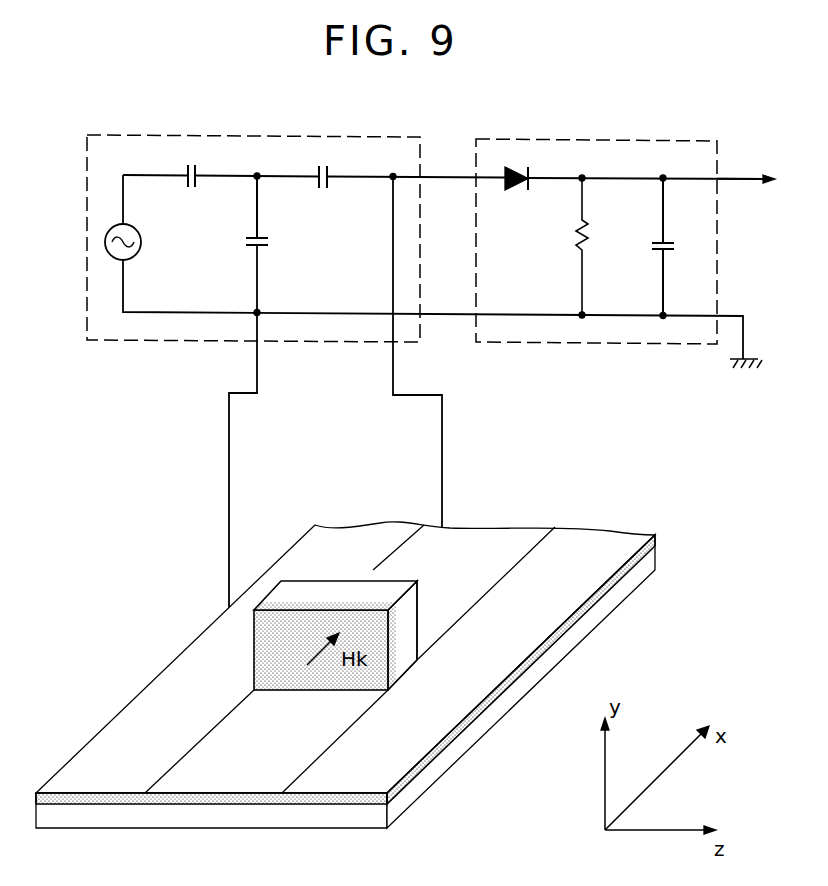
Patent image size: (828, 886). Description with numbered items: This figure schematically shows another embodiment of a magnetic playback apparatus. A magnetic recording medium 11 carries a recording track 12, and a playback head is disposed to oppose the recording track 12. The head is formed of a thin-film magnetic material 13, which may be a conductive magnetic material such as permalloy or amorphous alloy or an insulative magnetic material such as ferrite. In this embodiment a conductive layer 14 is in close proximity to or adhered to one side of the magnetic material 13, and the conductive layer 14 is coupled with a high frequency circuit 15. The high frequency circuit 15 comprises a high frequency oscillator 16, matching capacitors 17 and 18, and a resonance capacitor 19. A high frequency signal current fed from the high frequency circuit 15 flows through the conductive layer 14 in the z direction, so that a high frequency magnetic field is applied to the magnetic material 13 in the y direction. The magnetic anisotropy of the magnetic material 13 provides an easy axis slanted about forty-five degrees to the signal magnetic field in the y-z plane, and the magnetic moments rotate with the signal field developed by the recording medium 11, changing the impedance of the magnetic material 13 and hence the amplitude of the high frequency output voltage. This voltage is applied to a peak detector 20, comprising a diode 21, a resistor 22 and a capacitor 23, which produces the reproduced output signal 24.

The magnetic recording medium 11 is at (659, 543).
The recording track 12 is at (503, 540).
The thin-film magnetic material 13 is at (281, 682).
The conductive layer 14 is at (318, 590).
The high frequency circuit 15 is at (147, 135).
The high frequency oscillator 16 is at (141, 239).
The matching capacitor 17 is at (195, 189).
The matching capacitor 18 is at (327, 190).
The resonance capacitor 19 is at (271, 243).
The peak detector 20 is at (661, 140).
The diode 21 is at (516, 192).
The resistor 22 is at (577, 241).
The capacitor 23 is at (658, 247).
The reproduced output signal 24 is at (738, 179).